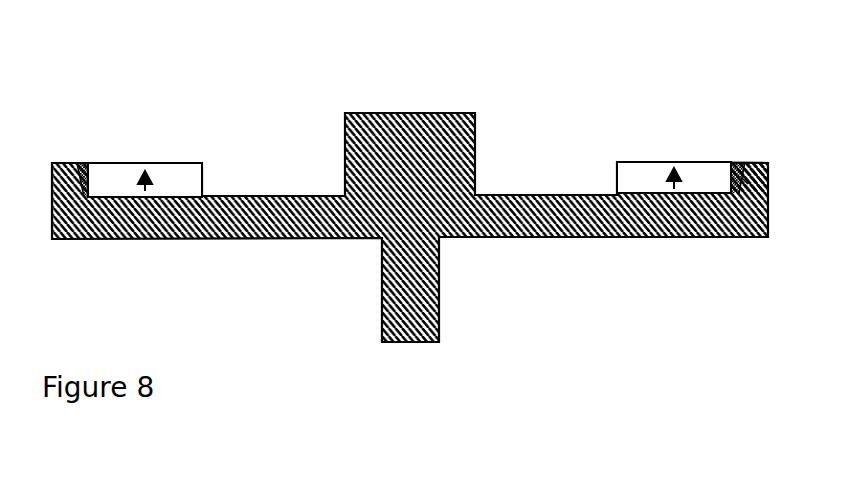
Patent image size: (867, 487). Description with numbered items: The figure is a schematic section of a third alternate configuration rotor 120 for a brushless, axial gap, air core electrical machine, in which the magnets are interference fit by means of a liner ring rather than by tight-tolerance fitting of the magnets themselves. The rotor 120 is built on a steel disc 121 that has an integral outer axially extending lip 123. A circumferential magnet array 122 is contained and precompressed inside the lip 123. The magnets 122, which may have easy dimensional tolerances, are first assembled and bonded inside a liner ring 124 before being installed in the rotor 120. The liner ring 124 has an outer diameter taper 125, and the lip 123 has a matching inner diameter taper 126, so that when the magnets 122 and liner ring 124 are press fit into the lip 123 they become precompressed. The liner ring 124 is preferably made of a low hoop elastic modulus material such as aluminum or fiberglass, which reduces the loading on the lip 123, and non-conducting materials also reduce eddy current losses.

The alternate configuration rotor 120 is at (94, 42).
The steel disc 121 is at (718, 246).
The circumferential magnet array 122 is at (634, 160).
The outer axially extending lip 123 is at (770, 151).
The liner ring 124 is at (737, 160).
The outer diameter taper 125 is at (747, 179).
The inner diameter taper 126 is at (735, 168).